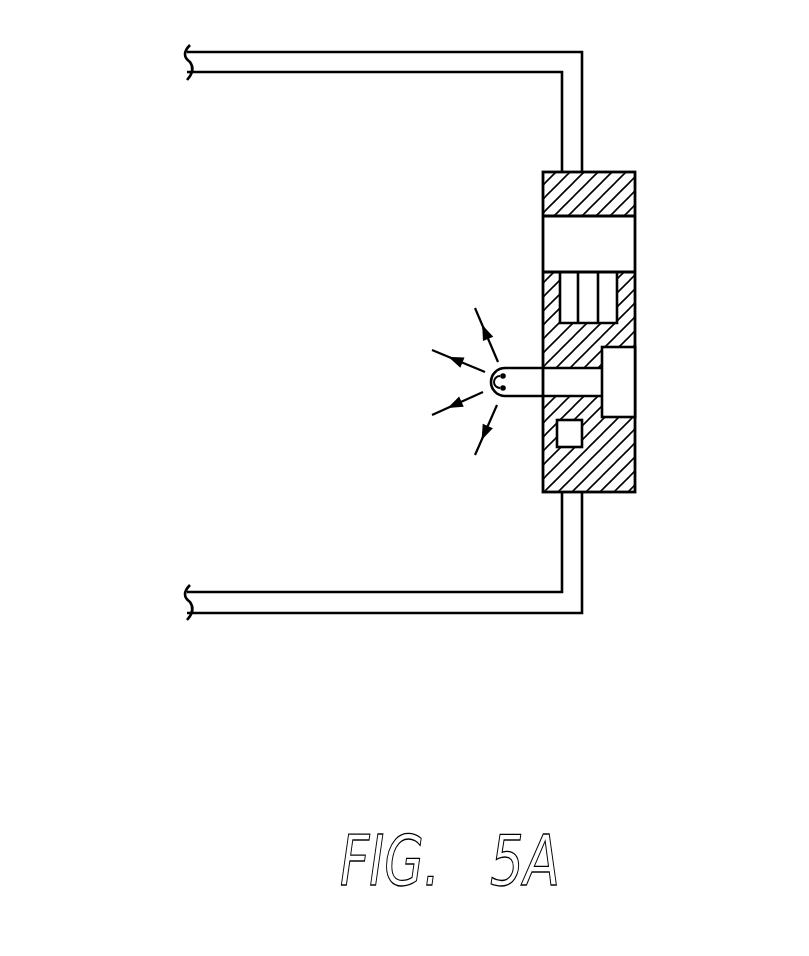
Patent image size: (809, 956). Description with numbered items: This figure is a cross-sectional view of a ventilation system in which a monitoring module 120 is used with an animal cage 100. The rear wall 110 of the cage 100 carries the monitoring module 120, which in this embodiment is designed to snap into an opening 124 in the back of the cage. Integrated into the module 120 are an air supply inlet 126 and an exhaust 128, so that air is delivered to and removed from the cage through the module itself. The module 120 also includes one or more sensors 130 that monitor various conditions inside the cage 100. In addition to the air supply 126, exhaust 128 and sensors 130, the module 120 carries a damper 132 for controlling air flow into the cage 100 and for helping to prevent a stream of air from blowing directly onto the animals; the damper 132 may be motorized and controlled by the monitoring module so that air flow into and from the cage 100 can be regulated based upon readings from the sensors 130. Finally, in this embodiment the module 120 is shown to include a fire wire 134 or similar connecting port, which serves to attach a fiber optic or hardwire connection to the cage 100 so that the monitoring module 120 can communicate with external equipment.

The cage 100 is at (277, 156).
The rear wall 110 is at (582, 90).
The monitoring module 120 is at (600, 492).
The opening 124 is at (585, 172).
The air supply inlet 126 is at (636, 383).
The exhaust 128 is at (636, 234).
The sensors 130 is at (617, 300).
The damper 132 is at (521, 368).
The fire wire 134 is at (584, 434).